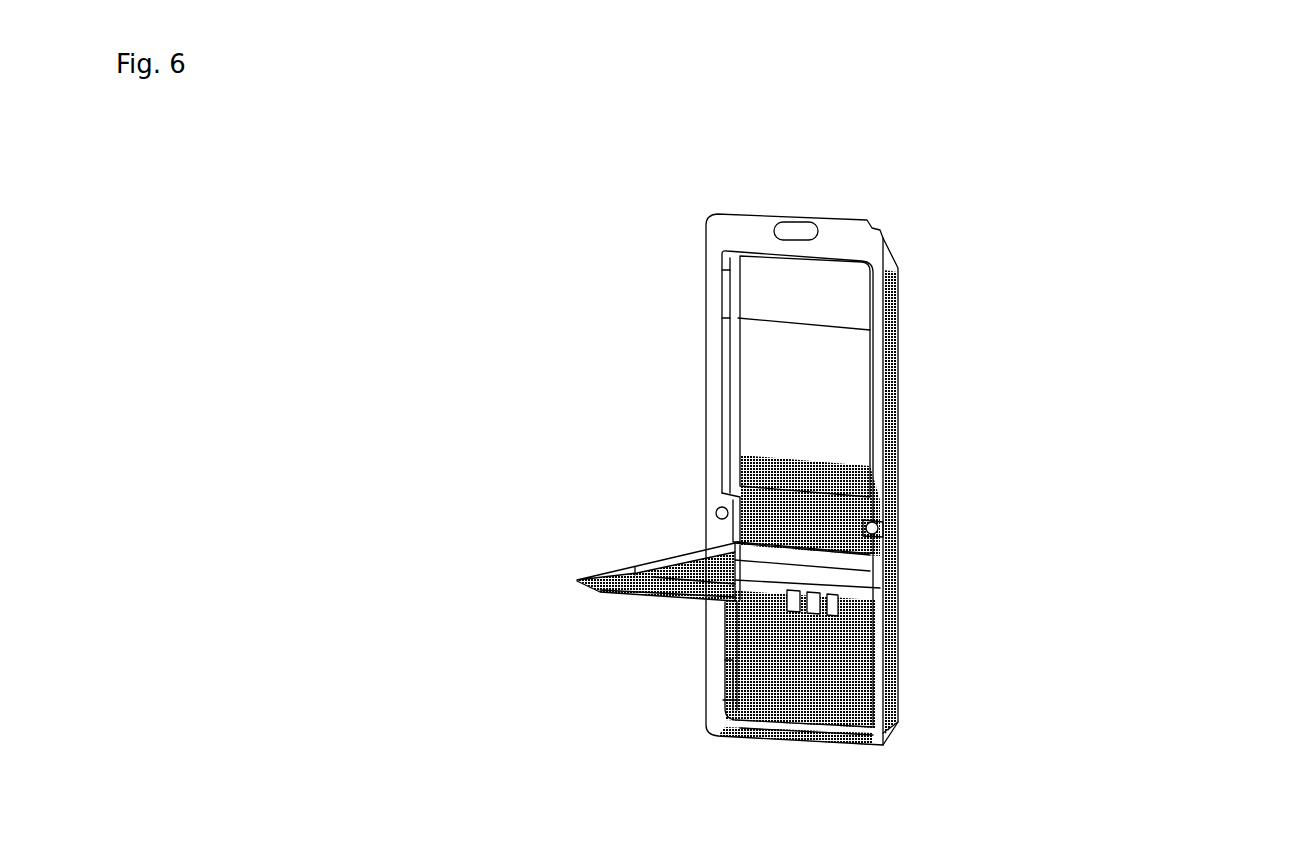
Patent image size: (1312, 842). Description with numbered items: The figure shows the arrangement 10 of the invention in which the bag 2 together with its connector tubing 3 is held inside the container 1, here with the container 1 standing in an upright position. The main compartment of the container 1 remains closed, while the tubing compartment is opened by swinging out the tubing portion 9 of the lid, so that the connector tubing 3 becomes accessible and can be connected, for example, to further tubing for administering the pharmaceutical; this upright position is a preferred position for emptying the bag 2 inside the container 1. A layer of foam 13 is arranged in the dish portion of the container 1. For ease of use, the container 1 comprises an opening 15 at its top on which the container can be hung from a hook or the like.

The container 1 is at (915, 213).
The bag 2 is at (818, 410).
The connector tubing 3 is at (836, 601).
The tubing portion 9 is at (592, 556).
The arrangement 10 is at (1117, 238).
The layer of foam 13 is at (818, 677).
The opening 15 is at (793, 233).